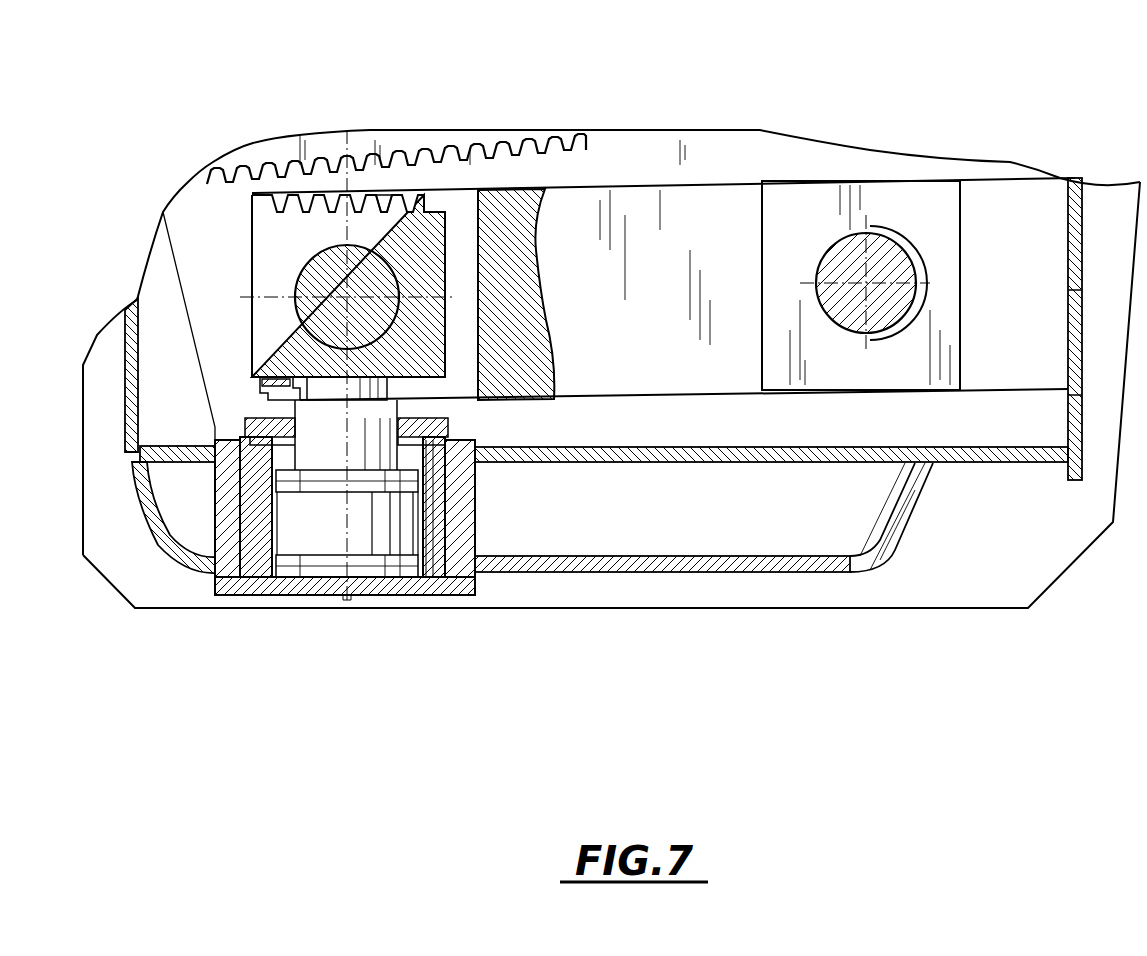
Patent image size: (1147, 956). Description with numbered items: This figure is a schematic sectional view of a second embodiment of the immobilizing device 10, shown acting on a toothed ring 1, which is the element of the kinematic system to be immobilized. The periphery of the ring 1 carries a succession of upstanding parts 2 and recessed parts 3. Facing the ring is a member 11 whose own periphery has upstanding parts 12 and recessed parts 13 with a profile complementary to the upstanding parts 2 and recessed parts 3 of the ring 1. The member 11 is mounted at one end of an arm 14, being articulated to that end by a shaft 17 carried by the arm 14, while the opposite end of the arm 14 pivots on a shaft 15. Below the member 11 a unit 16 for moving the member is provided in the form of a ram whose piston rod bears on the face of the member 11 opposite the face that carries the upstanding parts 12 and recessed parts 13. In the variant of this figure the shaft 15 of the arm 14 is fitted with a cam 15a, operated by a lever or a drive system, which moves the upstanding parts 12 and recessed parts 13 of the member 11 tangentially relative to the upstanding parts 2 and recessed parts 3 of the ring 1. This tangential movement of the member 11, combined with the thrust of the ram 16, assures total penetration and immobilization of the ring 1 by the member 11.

The toothed ring 1 is at (428, 150).
The upstanding parts 2 is at (235, 187).
The recessed parts 3 is at (545, 155).
The immobilizing device 10 is at (700, 420).
The member 11 is at (270, 266).
The upstanding parts 12 is at (258, 207).
The recessed parts 13 is at (420, 200).
The arm 14 is at (620, 380).
The shaft 15 is at (845, 258).
The cam 15a is at (912, 238).
The ram 16 is at (310, 520).
The shaft 17 is at (373, 318).